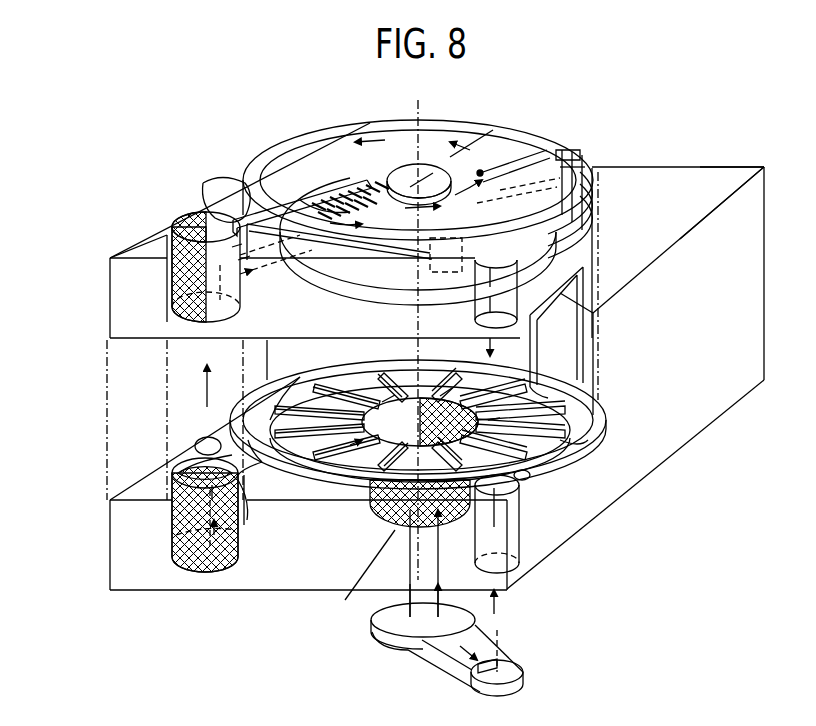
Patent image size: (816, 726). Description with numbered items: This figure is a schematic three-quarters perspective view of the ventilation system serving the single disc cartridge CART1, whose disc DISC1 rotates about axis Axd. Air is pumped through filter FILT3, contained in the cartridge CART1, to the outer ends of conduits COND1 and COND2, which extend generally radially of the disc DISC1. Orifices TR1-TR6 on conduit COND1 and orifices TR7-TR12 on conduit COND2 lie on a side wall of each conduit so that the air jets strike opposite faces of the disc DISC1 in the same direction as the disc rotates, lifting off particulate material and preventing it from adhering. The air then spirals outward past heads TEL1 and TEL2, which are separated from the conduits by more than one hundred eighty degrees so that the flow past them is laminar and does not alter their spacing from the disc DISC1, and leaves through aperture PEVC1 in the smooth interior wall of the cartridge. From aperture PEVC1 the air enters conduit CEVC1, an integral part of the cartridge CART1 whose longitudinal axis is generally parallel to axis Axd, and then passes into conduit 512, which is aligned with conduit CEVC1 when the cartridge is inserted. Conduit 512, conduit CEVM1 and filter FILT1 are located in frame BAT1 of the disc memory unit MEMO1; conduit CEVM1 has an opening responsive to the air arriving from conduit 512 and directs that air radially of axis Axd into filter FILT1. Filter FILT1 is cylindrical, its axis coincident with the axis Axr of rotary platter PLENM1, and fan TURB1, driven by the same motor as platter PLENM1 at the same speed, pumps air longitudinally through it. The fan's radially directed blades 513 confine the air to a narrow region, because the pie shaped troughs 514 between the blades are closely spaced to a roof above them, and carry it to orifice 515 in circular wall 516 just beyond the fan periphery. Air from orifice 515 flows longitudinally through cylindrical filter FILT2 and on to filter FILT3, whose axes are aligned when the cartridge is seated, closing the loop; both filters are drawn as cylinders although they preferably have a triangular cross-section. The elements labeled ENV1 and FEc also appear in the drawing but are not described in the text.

The envelope / enclosure ENV1 is at (222, 186).
The filter FILT3 is at (165, 310).
The filter FILT2 is at (167, 535).
The filter FILT1 is at (385, 523).
The orifices TR1-TR6 is at (307, 170).
The orifices TR7-TR12 is at (318, 238).
The conduit COND1 is at (352, 196).
The conduit COND2 is at (430, 265).
The axis of rotation of disc Axd is at (392, 325).
The axis of rotary platter Axr is at (358, 581).
The head TEL1 is at (480, 172).
The head TEL2 is at (489, 135).
The single disc cartridge CART1 is at (518, 112).
The carriage feed element FEc is at (553, 155).
The disc DISC1 is at (588, 165).
The disc memory unit MEMO1 is at (706, 163).
The frame BAT1 is at (737, 195).
The conduit CEVC1 is at (560, 278).
The aperture PEVC1 is at (433, 275).
The rotary platter PLENM1 is at (595, 425).
The fan TURB1 is at (290, 385).
The circular wall 516 is at (312, 470).
The orifice 515 is at (244, 528).
The pie shaped troughs 514 is at (573, 450).
The blades 513 is at (537, 465).
The conduit 512 is at (517, 544).
The conduit CEVM1 is at (497, 663).